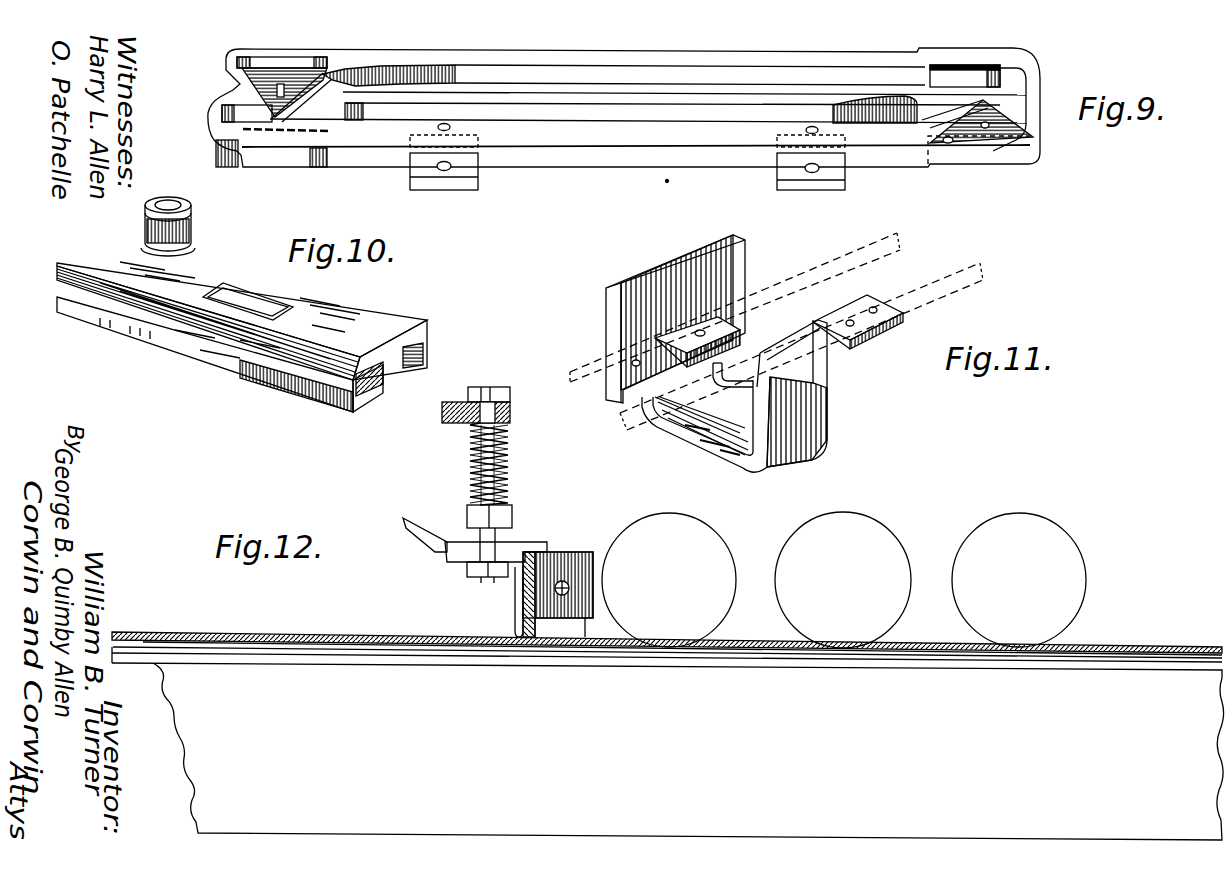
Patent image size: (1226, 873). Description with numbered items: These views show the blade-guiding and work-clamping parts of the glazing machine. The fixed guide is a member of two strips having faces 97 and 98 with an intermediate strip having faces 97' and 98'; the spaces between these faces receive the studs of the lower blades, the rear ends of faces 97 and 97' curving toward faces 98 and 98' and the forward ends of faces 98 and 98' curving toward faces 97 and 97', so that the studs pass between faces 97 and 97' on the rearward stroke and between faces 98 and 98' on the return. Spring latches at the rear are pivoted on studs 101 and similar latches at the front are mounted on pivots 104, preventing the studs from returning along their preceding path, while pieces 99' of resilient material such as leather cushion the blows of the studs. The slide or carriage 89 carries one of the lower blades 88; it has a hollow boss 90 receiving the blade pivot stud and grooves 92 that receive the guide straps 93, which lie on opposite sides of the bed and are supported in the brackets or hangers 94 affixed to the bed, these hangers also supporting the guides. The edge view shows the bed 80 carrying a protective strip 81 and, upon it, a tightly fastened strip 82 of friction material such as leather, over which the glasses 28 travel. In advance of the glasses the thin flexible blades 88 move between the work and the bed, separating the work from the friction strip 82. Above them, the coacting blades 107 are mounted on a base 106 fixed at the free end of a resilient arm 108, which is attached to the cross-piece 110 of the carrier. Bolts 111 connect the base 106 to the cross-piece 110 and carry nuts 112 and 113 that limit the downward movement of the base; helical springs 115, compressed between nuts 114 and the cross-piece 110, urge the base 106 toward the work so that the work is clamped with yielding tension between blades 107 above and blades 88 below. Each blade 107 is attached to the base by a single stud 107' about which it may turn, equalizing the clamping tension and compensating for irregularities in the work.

In FIG. 9, the stud 101 is at (320, 56).
In FIG. 9, the face 97 is at (624, 59).
In FIG. 9, the face 97' is at (672, 77).
In FIG. 9, the pieces of resilient material 99' is at (631, 132).
In FIG. 9, the face 98' is at (517, 153).
In FIG. 9, the face 98 is at (762, 161).
In FIG. 9, the pivot 104 is at (945, 148).
In FIG. 10, the slide or carriage 89 is at (103, 257).
In FIG. 10, the hollow boss 90 is at (192, 210).
In FIG. 10, the grooves 92 is at (415, 347).
In FIG. 11, the guide straps 93 is at (888, 243).
In FIG. 11, the brackets or hangers 94 is at (817, 407).
In FIG. 12, the bed or beam 80 is at (668, 751).
In FIG. 12, the protective strip 81 is at (733, 658).
In FIG. 12, the strip of friction material 82 is at (618, 657).
In FIG. 12, the blades 88 is at (535, 655).
In FIG. 12, the glasses 28 is at (791, 558).
In FIG. 12, the nut 112 is at (510, 391).
In FIG. 12, the cross-piece 110 is at (511, 412).
In FIG. 12, the bolts 111 is at (474, 468).
In FIG. 12, the helical springs 115 is at (509, 446).
In FIG. 12, the nuts 114 is at (468, 514).
In FIG. 12, the resilient arm 108 is at (440, 540).
In FIG. 12, the nut 113 is at (484, 577).
In FIG. 12, the blades 107 is at (504, 594).
In FIG. 12, the base 106 is at (575, 562).
In FIG. 12, the stud 107' is at (601, 592).